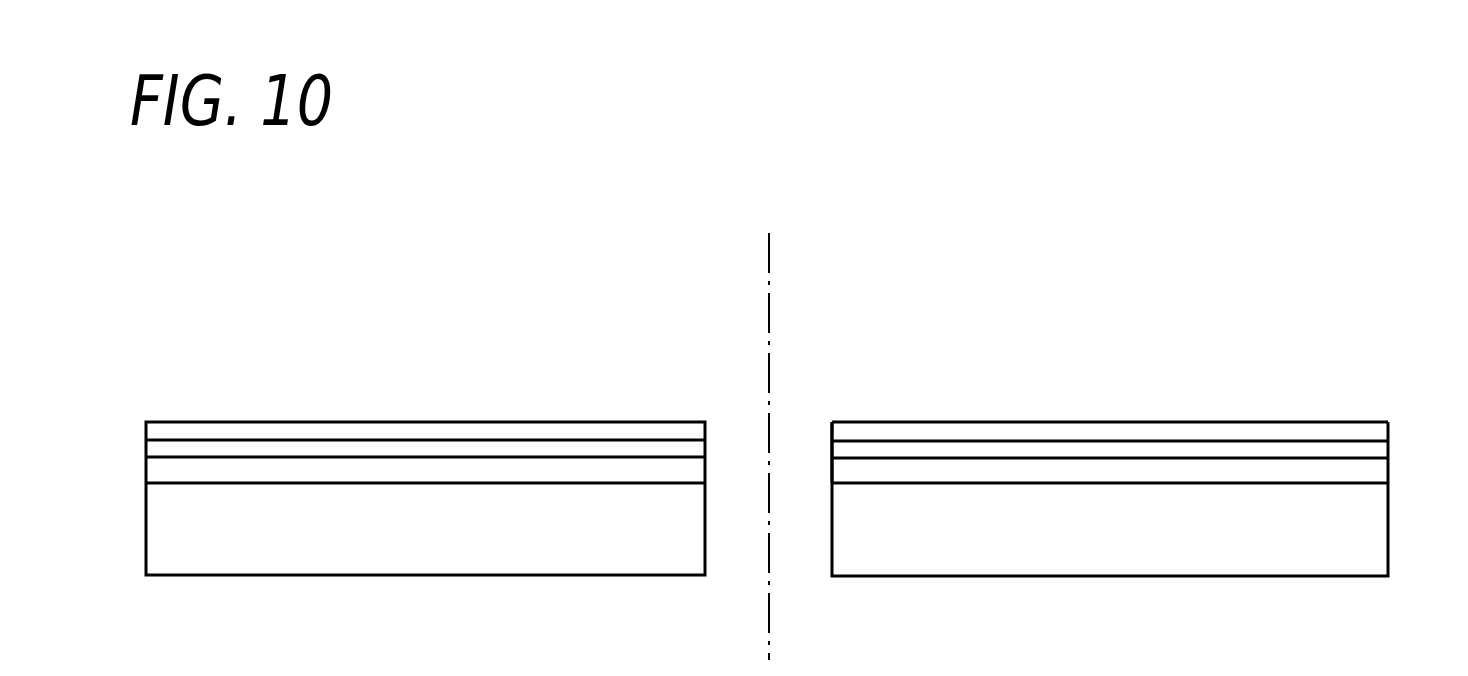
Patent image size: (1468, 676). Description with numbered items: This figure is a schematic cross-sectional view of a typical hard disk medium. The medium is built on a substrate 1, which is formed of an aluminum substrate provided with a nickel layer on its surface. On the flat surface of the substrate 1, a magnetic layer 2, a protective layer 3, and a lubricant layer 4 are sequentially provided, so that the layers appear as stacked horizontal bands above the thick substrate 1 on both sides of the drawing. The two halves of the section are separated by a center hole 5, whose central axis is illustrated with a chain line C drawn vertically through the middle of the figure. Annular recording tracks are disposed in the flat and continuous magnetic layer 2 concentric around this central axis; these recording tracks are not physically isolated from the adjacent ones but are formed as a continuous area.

The substrate 1 is at (1368, 533).
The magnetic layer 2 is at (1368, 472).
The protective layer 3 is at (1367, 451).
The lubricant layer 4 is at (1369, 432).
The center hole 5 is at (831, 470).
The chain line C is at (771, 273).